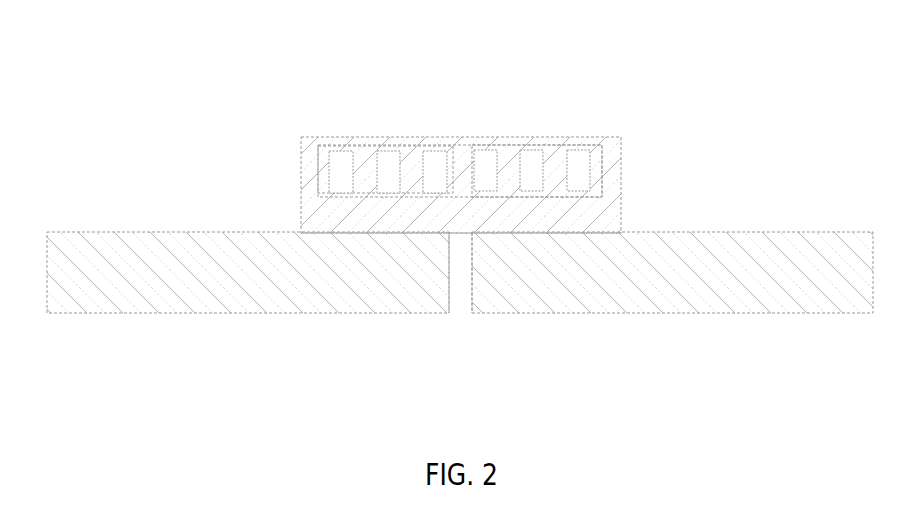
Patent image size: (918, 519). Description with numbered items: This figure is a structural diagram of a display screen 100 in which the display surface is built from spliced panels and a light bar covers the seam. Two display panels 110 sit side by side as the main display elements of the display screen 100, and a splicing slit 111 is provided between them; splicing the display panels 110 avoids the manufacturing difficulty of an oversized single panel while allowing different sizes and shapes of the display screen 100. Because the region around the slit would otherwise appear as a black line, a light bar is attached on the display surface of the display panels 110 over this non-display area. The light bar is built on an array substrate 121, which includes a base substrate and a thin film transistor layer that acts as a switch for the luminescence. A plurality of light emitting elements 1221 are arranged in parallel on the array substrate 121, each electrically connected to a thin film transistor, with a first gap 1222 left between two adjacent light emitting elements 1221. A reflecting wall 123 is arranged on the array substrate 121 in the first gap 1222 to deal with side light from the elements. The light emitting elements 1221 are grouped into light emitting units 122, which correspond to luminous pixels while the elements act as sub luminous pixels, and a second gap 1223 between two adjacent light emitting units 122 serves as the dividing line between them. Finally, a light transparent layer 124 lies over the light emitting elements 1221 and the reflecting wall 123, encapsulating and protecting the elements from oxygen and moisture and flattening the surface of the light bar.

The display screen 100 is at (452, 100).
The display panel 110 is at (378, 290).
The splicing slit 111 is at (460, 297).
The array substrate 121 is at (605, 222).
The light emitting unit 122 is at (320, 153).
The reflecting wall 123 is at (612, 178).
The light transparent layer 124 is at (552, 155).
The light emitting element 1221 is at (343, 177).
The first gap 1222 is at (362, 164).
The second gap 1223 is at (476, 147).